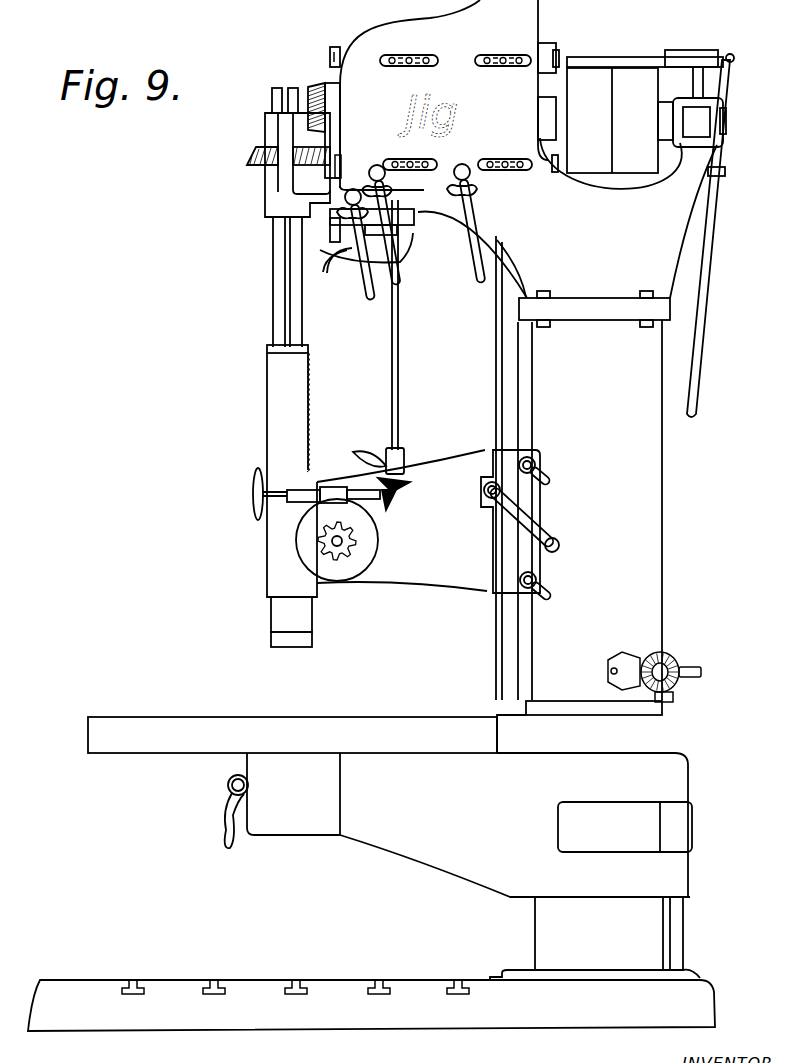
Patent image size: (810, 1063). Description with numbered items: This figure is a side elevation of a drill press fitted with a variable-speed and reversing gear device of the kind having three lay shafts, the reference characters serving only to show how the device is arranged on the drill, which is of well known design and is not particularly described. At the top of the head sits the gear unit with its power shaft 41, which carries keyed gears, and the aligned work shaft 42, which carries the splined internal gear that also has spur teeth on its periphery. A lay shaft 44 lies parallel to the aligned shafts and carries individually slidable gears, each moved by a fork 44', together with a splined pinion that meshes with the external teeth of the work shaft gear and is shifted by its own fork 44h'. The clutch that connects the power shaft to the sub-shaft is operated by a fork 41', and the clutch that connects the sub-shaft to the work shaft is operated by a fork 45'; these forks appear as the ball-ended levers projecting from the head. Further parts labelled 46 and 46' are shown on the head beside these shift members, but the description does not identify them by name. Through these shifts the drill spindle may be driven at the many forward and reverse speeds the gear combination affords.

The power shaft 41 is at (727, 235).
The fork 41' is at (458, 223).
The work shaft 42 is at (313, 110).
The lay shaft 44 is at (352, 130).
The fork 44' is at (470, 192).
The fork 44h' is at (342, 284).
The fork 45' is at (381, 208).
The bracket 46 is at (323, 37).
The chain link 46' is at (455, 41).